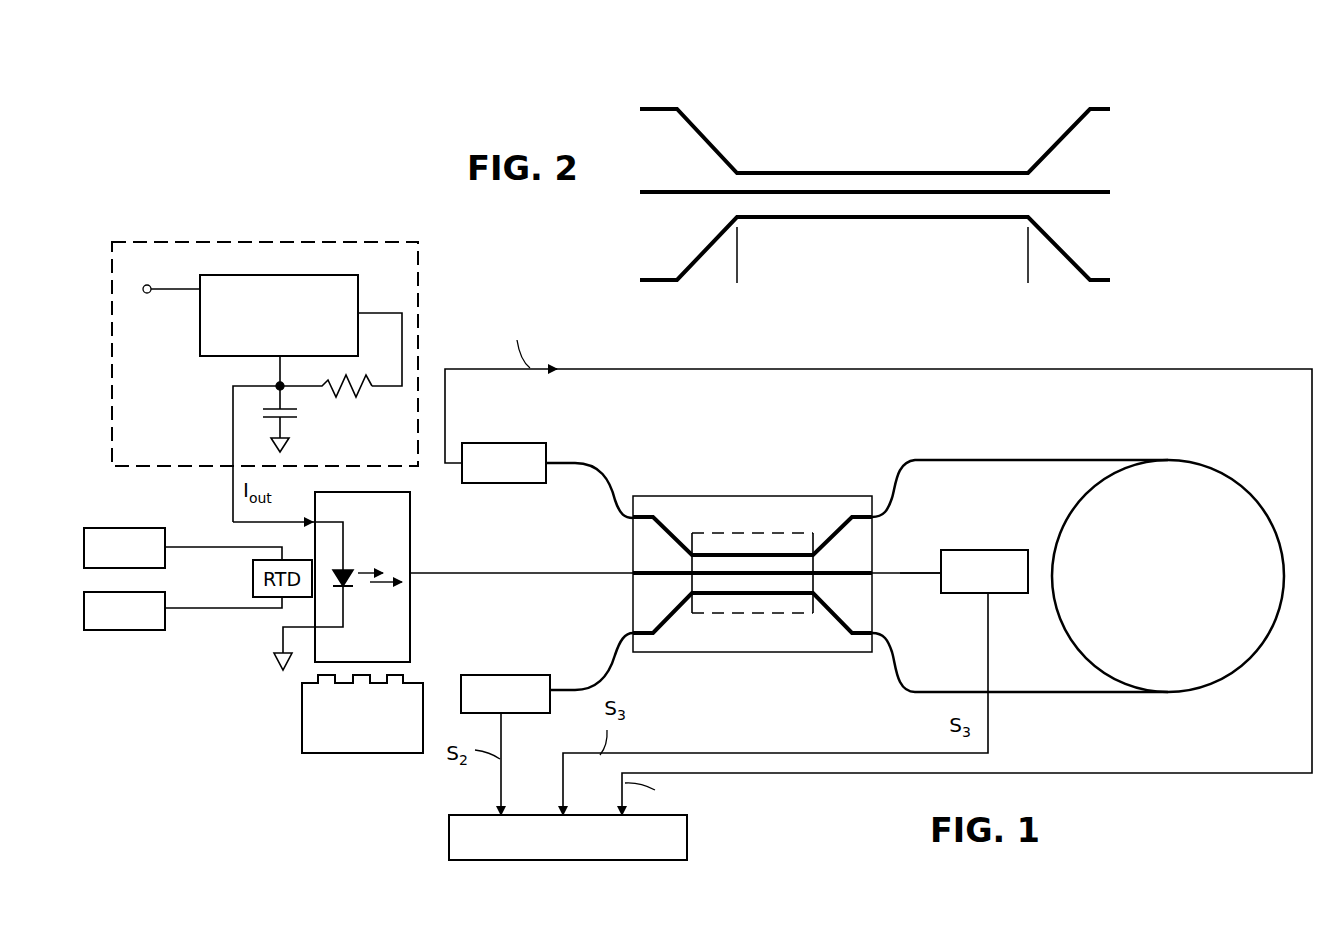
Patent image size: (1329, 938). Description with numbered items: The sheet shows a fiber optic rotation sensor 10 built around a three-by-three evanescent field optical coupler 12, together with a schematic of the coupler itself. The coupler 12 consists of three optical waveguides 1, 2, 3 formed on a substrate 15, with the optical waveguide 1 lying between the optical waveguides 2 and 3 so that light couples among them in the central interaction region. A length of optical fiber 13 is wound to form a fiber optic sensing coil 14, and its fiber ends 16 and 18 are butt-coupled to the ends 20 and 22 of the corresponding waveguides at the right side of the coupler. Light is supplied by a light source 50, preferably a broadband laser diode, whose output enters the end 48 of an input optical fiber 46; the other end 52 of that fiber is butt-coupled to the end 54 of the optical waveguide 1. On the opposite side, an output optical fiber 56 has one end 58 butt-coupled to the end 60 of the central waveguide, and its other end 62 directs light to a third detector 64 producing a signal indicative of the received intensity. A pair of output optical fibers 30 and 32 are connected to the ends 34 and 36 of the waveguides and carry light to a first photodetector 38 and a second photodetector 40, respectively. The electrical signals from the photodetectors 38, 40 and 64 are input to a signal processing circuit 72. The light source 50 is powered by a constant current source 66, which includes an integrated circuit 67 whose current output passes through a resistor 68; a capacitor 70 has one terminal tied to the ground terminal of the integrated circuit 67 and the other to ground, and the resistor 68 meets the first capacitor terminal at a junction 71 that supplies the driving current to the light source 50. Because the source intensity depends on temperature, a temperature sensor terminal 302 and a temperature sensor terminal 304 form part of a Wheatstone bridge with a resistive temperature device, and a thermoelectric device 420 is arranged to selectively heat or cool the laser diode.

In FIG. 2, the optical waveguide 1 is at (987, 142).
In FIG. 1, the optical waveguide 1 is at (725, 571).
In FIG. 2, the optical waveguide 2 is at (836, 172).
In FIG. 1, the optical waveguide 2 is at (772, 553).
In FIG. 2, the optical waveguide 3 is at (860, 254).
In FIG. 1, the optical waveguide 3 is at (795, 596).
In FIG. 1, the fiber optic rotation sensor 10 is at (1175, 731).
In FIG. 2, the 3×3 optical coupler 12 is at (875, 175).
In FIG. 1, the 3×3 optical coupler 12 is at (749, 581).
In FIG. 1, the optical fiber 13 is at (1045, 693).
In FIG. 1, the fiber optic sensing coil 14 is at (1225, 678).
In FIG. 1, the substrate 15 is at (716, 652).
In FIG. 1, the fiber end 16 is at (905, 482).
In FIG. 1, the fiber end 18 is at (905, 672).
In FIG. 1, the waveguide end 20 is at (866, 516).
In FIG. 1, the waveguide end 22 is at (862, 640).
In FIG. 1, the output optical fiber 30 is at (578, 461).
In FIG. 1, the output optical fiber 32 is at (570, 689).
In FIG. 1, the waveguide end 34 is at (634, 512).
In FIG. 1, the waveguide end 36 is at (640, 640).
In FIG. 1, the first photodetector 38 is at (508, 443).
In FIG. 1, the second photodetector 40 is at (515, 675).
In FIG. 1, the input optical fiber 46 is at (567, 572).
In FIG. 1, the input fiber end 48 is at (412, 580).
In FIG. 1, the light source 50 is at (369, 581).
In FIG. 1, the input fiber end 52 is at (633, 577).
In FIG. 1, the waveguide end 54 is at (638, 570).
In FIG. 1, the output optical fiber 56 is at (928, 573).
In FIG. 1, the output fiber end 58 is at (876, 578).
In FIG. 1, the waveguide end 60 is at (873, 570).
In FIG. 1, the output fiber end 62 is at (935, 580).
In FIG. 1, the third detector 64 is at (1008, 593).
In FIG. 1, the constant current source 66 is at (265, 354).
In FIG. 1, the integrated circuit 67 is at (200, 306).
In FIG. 1, the resistor 68 is at (345, 390).
In FIG. 1, the capacitor 70 is at (268, 421).
In FIG. 1, the junction 71 is at (277, 385).
In FIG. 1, the signal processing circuit 72 is at (690, 832).
In FIG. 1, the temperature sensor terminal 302 is at (165, 558).
In FIG. 1, the temperature sensor terminal 304 is at (165, 620).
In FIG. 1, the thermoelectric device 420 is at (370, 753).